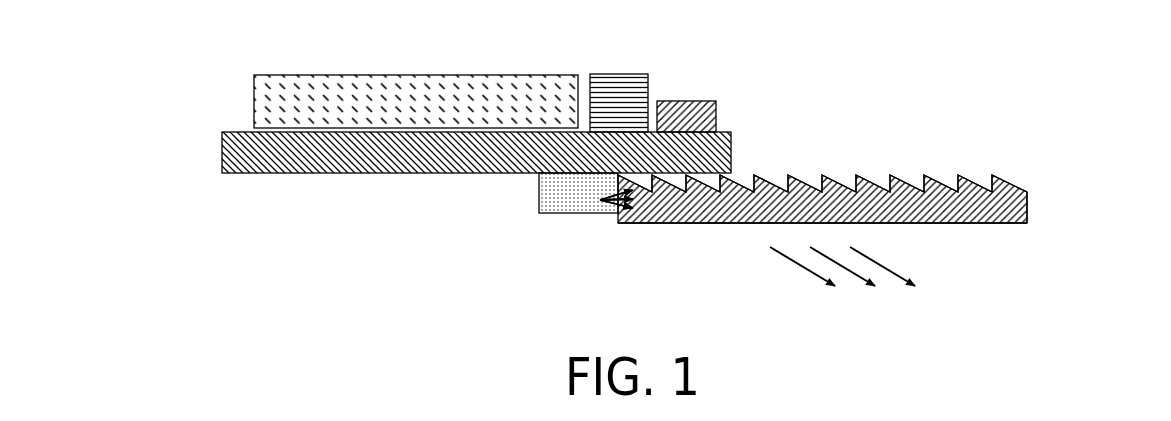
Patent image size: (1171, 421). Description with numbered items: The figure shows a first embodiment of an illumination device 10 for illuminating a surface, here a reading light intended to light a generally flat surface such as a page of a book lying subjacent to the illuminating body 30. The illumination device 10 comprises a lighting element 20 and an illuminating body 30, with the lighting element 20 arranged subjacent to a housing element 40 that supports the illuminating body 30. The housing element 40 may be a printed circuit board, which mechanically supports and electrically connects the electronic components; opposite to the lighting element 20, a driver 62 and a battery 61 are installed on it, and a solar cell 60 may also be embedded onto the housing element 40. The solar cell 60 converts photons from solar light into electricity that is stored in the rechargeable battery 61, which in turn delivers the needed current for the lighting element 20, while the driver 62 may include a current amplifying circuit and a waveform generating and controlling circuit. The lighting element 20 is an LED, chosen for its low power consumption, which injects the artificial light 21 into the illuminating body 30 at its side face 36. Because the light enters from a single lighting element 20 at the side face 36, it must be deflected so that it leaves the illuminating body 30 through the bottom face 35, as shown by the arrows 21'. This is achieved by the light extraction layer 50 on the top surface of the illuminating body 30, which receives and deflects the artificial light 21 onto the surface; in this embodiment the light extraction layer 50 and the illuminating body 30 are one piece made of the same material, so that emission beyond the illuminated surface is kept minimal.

The illumination device 10 is at (1106, 113).
The lighting element 20 is at (543, 200).
The artificial light 21 is at (602, 233).
The arrows 21' is at (842, 287).
The illuminating body 30 is at (1029, 197).
The bottom face 35 is at (982, 226).
The side face 36 is at (1029, 211).
The housing element 40 is at (285, 160).
The light extraction layer 50 is at (996, 184).
The solar cell 60 is at (413, 83).
The battery 61 is at (617, 84).
The driver 62 is at (690, 104).